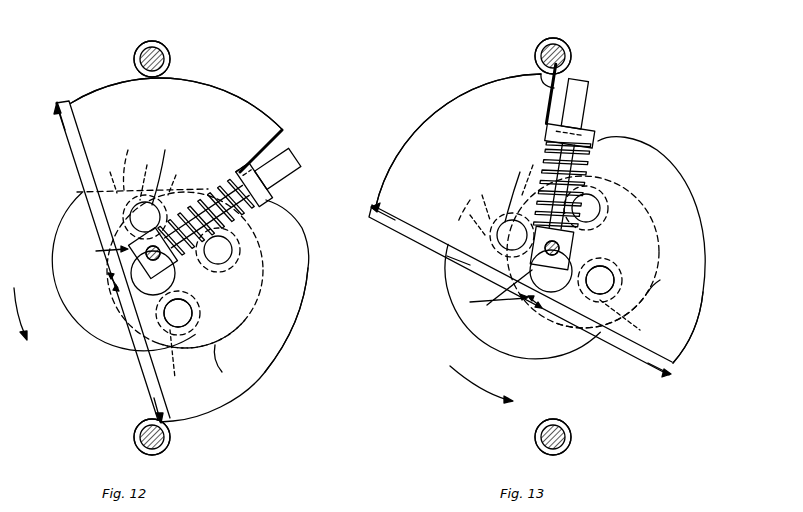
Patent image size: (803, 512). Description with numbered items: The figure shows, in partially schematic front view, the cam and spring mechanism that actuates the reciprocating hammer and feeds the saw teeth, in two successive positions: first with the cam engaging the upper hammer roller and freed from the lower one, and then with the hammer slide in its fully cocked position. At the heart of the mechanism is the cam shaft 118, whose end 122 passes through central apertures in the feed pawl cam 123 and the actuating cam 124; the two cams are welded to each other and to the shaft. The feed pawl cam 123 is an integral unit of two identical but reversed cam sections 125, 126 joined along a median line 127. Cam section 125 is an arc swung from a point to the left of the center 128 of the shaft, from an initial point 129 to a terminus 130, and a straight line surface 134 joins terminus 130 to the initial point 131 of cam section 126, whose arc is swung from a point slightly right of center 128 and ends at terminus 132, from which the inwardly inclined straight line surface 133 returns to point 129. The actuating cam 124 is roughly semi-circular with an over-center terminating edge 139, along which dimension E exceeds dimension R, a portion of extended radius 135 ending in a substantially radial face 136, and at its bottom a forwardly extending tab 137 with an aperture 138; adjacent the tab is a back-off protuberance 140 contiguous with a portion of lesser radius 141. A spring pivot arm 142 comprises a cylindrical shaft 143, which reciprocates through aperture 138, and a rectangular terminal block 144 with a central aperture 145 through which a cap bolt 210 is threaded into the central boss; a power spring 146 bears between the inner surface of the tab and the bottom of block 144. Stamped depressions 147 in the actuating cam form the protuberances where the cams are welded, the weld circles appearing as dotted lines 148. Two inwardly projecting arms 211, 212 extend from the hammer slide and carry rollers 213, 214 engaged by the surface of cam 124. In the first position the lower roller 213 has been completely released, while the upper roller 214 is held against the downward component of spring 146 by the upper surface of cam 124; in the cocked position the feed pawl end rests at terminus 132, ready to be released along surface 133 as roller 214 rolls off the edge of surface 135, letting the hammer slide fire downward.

In FIG. 12, the cam shaft 118 is at (160, 262).
In FIG. 13, the cam shaft 118 is at (575, 252).
In FIG. 12, the end of cam shaft 122 is at (188, 300).
In FIG. 13, the end of cam shaft 122 is at (582, 262).
In FIG. 12, the feed pawl cam 123 is at (83, 329).
In FIG. 13, the feed pawl cam 123 is at (557, 369).
In FIG. 12, the actuating cam 124 is at (226, 93).
In FIG. 13, the actuating cam 124 is at (461, 93).
In FIG. 12, the cam section 125 is at (54, 240).
In FIG. 13, the cam section 125 is at (500, 352).
In FIG. 12, the cam section 126 is at (262, 276).
In FIG. 13, the cam section 126 is at (650, 200).
In FIG. 12, the median line 127 is at (131, 163).
In FIG. 13, the median line 127 is at (458, 203).
In FIG. 12, the center of shaft 128 is at (137, 286).
In FIG. 13, the center of shaft 128 is at (560, 290).
In FIG. 12, the initial point of arc 129 is at (183, 360).
In FIG. 13, the initial point of arc 129 is at (630, 321).
In FIG. 12, the terminus of arc 130 is at (80, 192).
In FIG. 13, the terminus of arc 130 is at (447, 258).
In FIG. 12, the initial point of arc 131 is at (150, 175).
In FIG. 13, the initial point of arc 131 is at (480, 199).
In FIG. 12, the terminus of arc 132 is at (236, 345).
In FIG. 13, the terminus of arc 132 is at (672, 265).
In FIG. 12, the straight line surface 133 is at (228, 358).
In FIG. 13, the straight line surface 133 is at (671, 283).
In FIG. 12, the straight line surface 134 is at (106, 173).
In FIG. 13, the straight line surface 134 is at (460, 224).
In FIG. 12, the portion of extended radius 135 is at (256, 101).
In FIG. 13, the portion of extended radius 135 is at (483, 90).
In FIG. 12, the radial face 136 is at (272, 134).
In FIG. 13, the radial face 136 is at (540, 80).
In FIG. 12, the forwardly extending tab 137 is at (272, 194).
In FIG. 13, the forwardly extending tab 137 is at (592, 135).
In FIG. 12, the aperture 138 is at (249, 168).
In FIG. 13, the aperture 138 is at (552, 128).
In FIG. 12, the over-center terminating edge 139 is at (77, 123).
In FIG. 13, the over-center terminating edge 139 is at (400, 210).
In FIG. 12, the back-off protuberance 140 is at (300, 218).
In FIG. 13, the back-off protuberance 140 is at (650, 116).
In FIG. 12, the portion of lesser radius 141 is at (304, 305).
In FIG. 13, the portion of lesser radius 141 is at (697, 205).
In FIG. 12, the spring pivot arm 142 is at (99, 267).
In FIG. 13, the spring pivot arm 142 is at (506, 292).
In FIG. 12, the cylindrical shaft 143 is at (290, 160).
In FIG. 13, the cylindrical shaft 143 is at (583, 90).
In FIG. 12, the rectangular terminal block 144 is at (165, 268).
In FIG. 13, the rectangular terminal block 144 is at (580, 246).
In FIG. 12, the aperture 145 is at (172, 262).
In FIG. 13, the aperture 145 is at (580, 240).
In FIG. 12, the power spring 146 is at (235, 200).
In FIG. 13, the power spring 146 is at (552, 148).
In FIG. 12, the stamped depressions 147 is at (208, 330).
In FIG. 13, the stamped depressions 147 is at (650, 296).
In FIG. 12, the weld circles 148 is at (205, 370).
In FIG. 13, the weld circles 148 is at (650, 308).
In FIG. 12, the cap bolt 210 is at (160, 206).
In FIG. 13, the cap bolt 210 is at (520, 220).
In FIG. 12, the inwardly projecting arm 211 is at (168, 445).
In FIG. 13, the inwardly projecting arm 211 is at (568, 438).
In FIG. 12, the inwardly projecting arm 212 is at (165, 62).
In FIG. 13, the inwardly projecting arm 212 is at (553, 45).
In FIG. 12, the roller 213 is at (165, 437).
In FIG. 13, the roller 213 is at (566, 426).
In FIG. 12, the roller 214 is at (166, 47).
In FIG. 13, the roller 214 is at (569, 48).